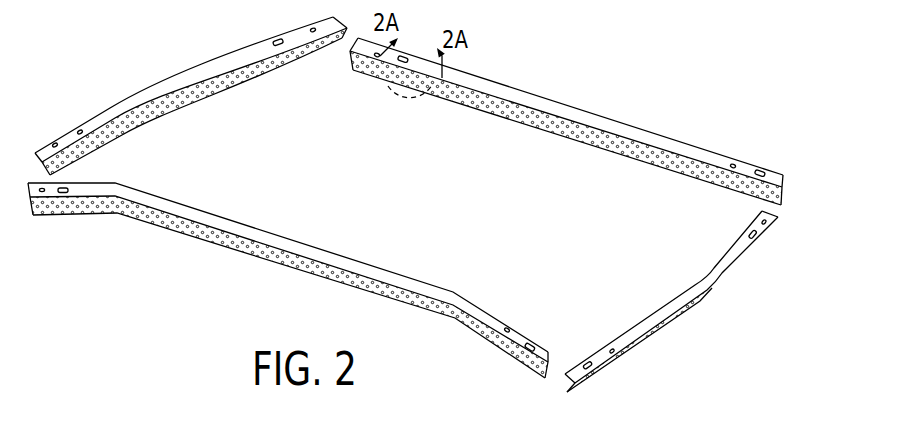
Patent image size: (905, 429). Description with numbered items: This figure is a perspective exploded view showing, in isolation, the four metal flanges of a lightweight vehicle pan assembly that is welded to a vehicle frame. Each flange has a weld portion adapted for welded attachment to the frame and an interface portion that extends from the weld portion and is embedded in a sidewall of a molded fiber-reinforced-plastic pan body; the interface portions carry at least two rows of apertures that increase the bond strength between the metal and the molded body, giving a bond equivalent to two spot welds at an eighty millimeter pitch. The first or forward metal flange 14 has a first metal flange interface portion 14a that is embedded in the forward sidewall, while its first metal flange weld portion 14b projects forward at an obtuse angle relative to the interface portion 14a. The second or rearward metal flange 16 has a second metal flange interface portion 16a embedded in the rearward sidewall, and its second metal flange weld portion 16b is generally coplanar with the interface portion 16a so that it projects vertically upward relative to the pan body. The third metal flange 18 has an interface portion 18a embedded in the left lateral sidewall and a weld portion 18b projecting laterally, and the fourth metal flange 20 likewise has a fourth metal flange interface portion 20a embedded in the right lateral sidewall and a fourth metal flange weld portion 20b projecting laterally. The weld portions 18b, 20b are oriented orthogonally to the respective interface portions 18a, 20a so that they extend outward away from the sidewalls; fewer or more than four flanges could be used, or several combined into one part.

The first or forward metal flange 14 is at (566, 122).
The first metal flange interface portion 14a is at (625, 158).
The first metal flange weld portion 14b is at (658, 133).
The second or rearward metal flange 16 is at (288, 280).
The second metal flange interface portion 16a is at (290, 266).
The second metal flange weld portion 16b is at (283, 238).
The third metal flange 18 is at (191, 94).
The third metal flange interface portion 18a is at (208, 88).
The third metal flange weld portion 18b is at (200, 64).
The fourth metal flange 20 is at (674, 301).
The fourth metal flange interface portion 20a is at (625, 352).
The fourth metal flange weld portion 20b is at (750, 248).